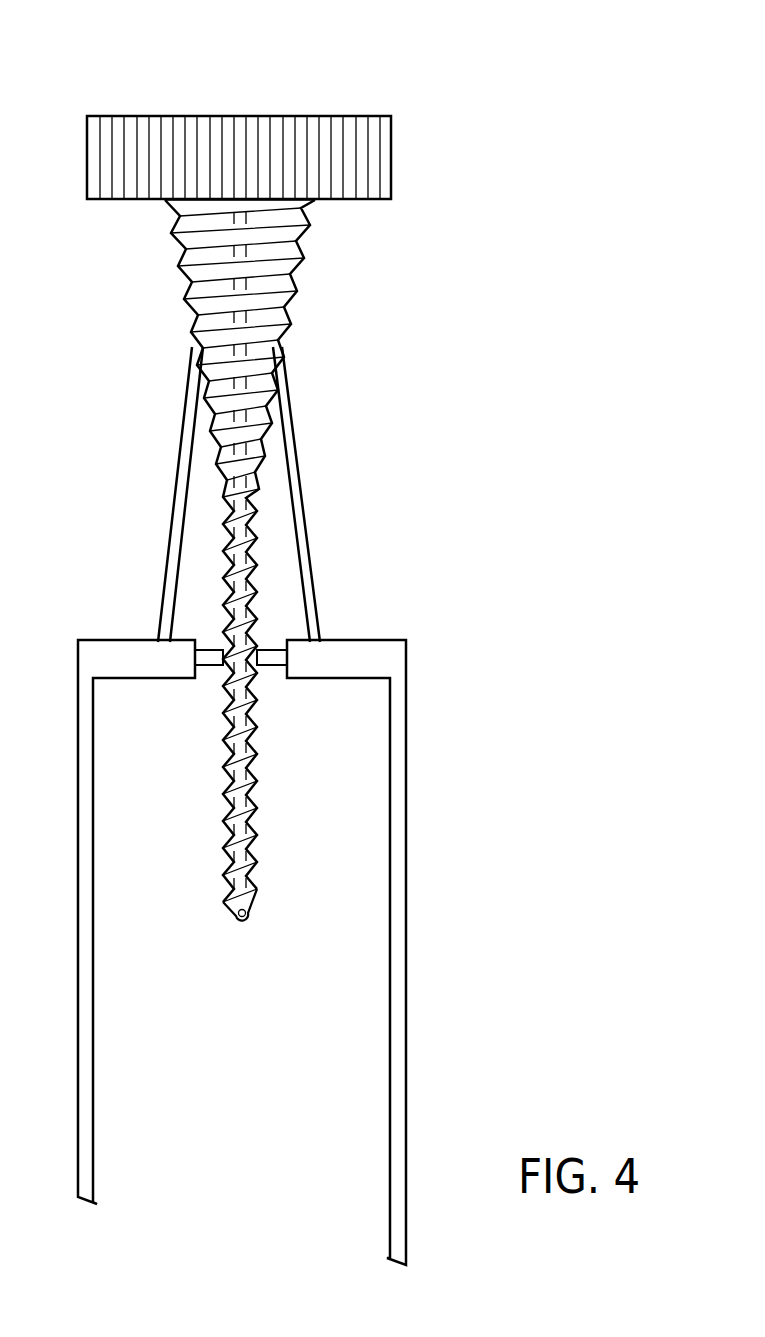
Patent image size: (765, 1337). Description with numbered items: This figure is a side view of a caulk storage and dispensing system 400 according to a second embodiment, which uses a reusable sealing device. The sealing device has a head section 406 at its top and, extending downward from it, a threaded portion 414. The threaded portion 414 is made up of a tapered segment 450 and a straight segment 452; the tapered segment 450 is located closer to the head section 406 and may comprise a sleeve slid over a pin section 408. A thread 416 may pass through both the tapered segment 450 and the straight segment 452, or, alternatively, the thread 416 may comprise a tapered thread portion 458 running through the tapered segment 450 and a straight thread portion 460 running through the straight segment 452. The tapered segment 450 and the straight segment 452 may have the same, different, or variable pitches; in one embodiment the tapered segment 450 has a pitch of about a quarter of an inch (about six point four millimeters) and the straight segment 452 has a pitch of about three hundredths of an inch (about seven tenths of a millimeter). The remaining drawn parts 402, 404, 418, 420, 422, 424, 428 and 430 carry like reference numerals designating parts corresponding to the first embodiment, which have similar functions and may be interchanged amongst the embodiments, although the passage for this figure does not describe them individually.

The caulk storage and dispensing system 400 is at (591, 11).
The screw anchor assembly 402 is at (140, 299).
The housing 404 is at (398, 777).
The head section 406 is at (392, 150).
The pin section 408 is at (262, 460).
The threaded portion 414 is at (198, 348).
The thread 416 is at (257, 463).
The tip 418 is at (247, 916).
The support arm 420 is at (297, 537).
The tab 422 is at (260, 673).
The tab 424 is at (208, 668).
The rod 428 is at (310, 608).
The thread crest 430 is at (270, 418).
The tapered segment 450 is at (265, 253).
The straight segment 452 is at (227, 573).
The tapered thread portion 458 is at (260, 302).
The straight thread portion 460 is at (250, 805).